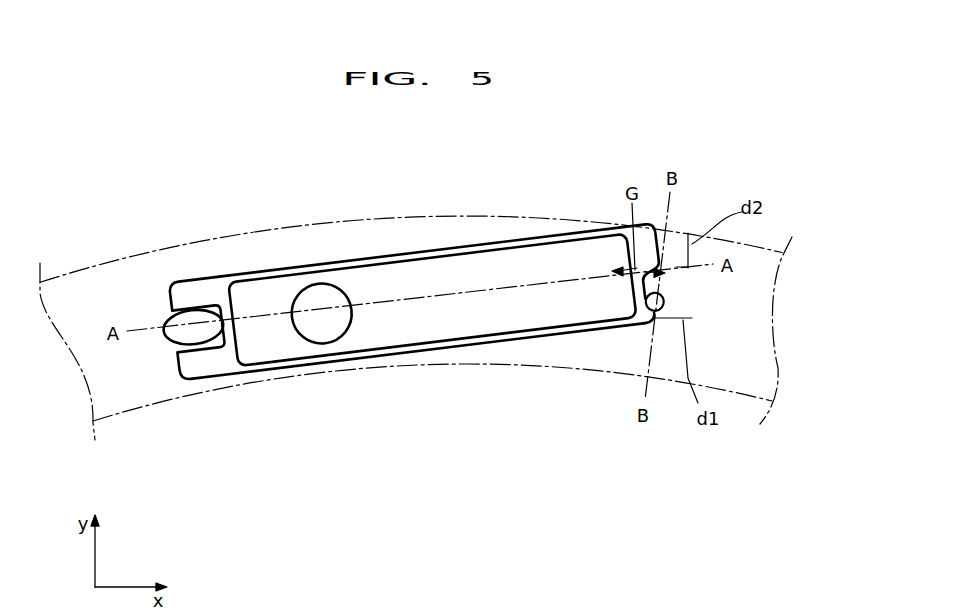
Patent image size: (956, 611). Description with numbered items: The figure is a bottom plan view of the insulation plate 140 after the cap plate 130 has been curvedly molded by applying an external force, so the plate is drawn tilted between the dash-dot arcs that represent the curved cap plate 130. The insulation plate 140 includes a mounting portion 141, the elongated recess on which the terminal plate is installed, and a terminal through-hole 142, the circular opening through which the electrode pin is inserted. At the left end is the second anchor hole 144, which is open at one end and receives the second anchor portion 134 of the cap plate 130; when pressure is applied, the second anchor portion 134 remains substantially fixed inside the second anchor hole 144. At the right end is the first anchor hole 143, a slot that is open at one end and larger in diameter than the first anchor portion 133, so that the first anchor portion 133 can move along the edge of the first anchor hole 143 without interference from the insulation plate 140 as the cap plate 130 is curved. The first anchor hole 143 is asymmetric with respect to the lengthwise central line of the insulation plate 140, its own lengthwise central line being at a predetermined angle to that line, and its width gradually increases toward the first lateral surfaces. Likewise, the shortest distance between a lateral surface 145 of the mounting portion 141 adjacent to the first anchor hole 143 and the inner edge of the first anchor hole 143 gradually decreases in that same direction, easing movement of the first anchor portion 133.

The cap plate 130 is at (382, 217).
The insulation plate 140 is at (528, 172).
The second anchor portion 134 is at (194, 320).
The second anchor hole 144 is at (192, 345).
The mounting portion 141 is at (450, 320).
The terminal through-hole 142 is at (322, 328).
The lateral surface of the mounting portion 145 is at (631, 293).
The first anchor hole 143 is at (653, 280).
The first anchor portion 133 is at (665, 303).